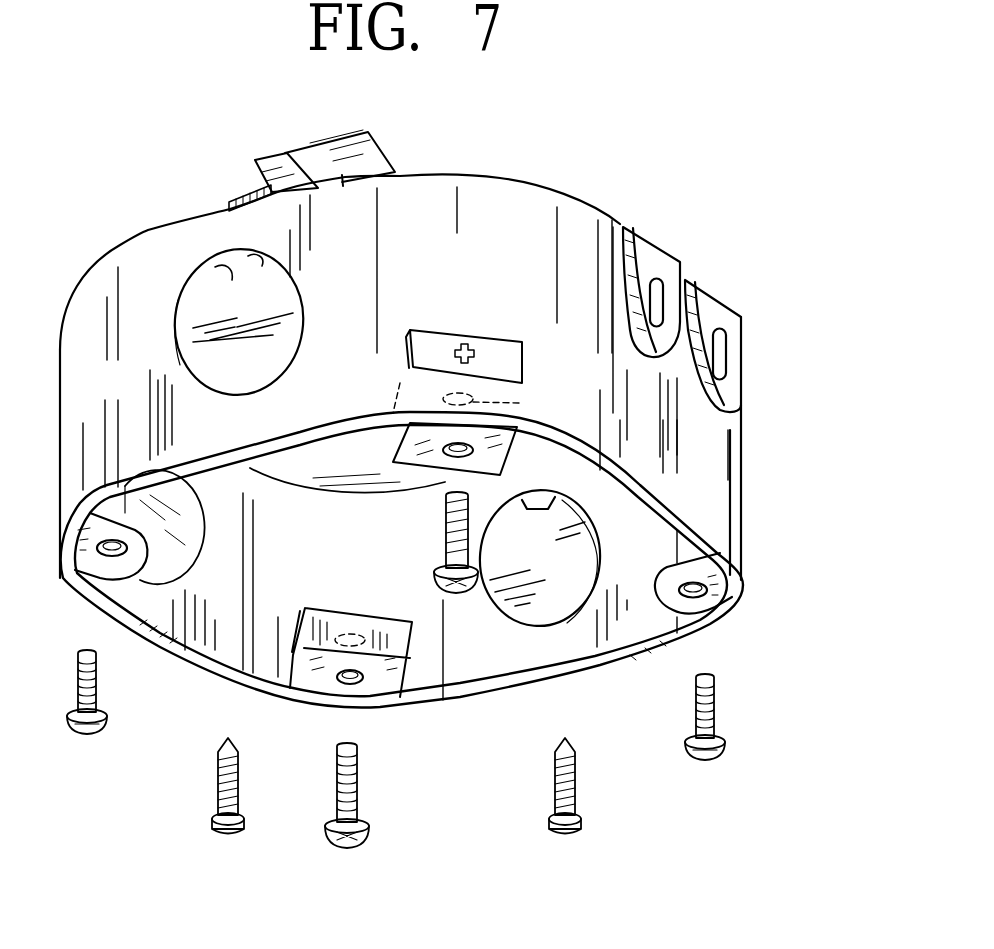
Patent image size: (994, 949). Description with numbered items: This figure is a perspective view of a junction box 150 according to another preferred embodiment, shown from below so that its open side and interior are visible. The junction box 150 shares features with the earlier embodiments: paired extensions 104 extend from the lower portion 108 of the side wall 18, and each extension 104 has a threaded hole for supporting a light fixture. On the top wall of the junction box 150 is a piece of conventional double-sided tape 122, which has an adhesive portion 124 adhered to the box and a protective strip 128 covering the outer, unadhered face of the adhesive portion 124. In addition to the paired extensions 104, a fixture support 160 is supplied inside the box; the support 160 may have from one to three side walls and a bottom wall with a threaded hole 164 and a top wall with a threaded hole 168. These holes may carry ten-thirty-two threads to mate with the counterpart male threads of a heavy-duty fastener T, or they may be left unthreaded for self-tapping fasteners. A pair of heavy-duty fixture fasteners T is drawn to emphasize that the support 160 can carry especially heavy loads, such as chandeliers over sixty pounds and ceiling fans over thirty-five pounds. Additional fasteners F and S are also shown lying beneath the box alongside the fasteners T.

The junction box 150 is at (777, 360).
The side wall 18 is at (720, 475).
The adhesive portion 124 is at (288, 158).
The protective strip 128 is at (368, 137).
The double-sided tape 122 is at (368, 171).
The threaded hole 168 is at (522, 403).
The fixture support 160 is at (402, 667).
The threaded hole 164 is at (357, 683).
The lower portion 108 is at (566, 672).
The extension 104 is at (657, 578).
The machine screw F is at (102, 692).
The tapping screw S is at (214, 803).
The fastener T is at (360, 810).